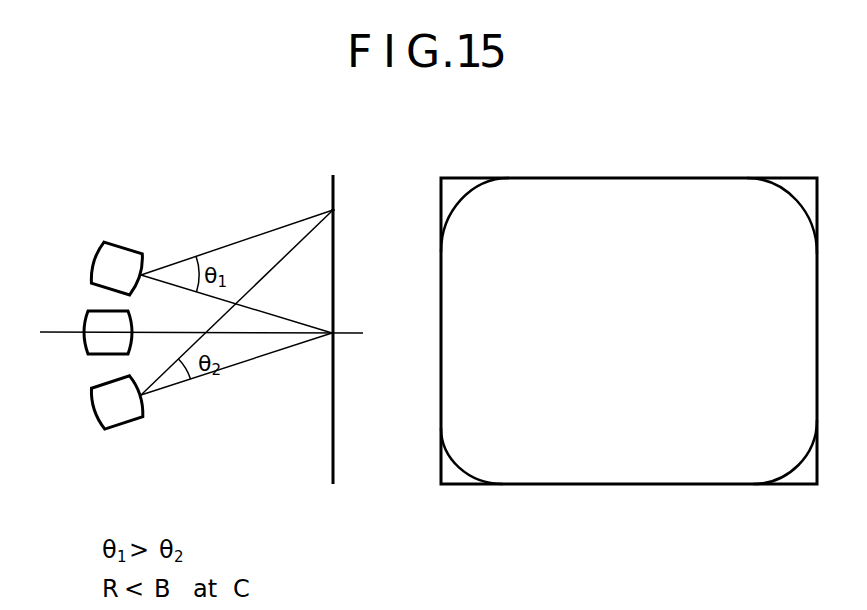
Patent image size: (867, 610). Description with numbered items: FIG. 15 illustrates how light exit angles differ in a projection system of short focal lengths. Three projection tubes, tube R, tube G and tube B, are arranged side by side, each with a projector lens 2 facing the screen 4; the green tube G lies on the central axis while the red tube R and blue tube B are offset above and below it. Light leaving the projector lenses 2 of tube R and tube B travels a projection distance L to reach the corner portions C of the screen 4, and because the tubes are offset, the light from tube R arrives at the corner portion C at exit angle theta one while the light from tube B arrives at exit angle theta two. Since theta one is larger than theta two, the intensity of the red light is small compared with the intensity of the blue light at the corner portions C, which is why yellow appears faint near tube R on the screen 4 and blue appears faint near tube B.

The projector lens 2 is at (85, 336).
The screen 4 is at (580, 327).
The tube R is at (141, 275).
The tube G is at (71, 332).
The tube B is at (141, 395).
The projection distance L is at (296, 245).
The corner portion C is at (800, 526).